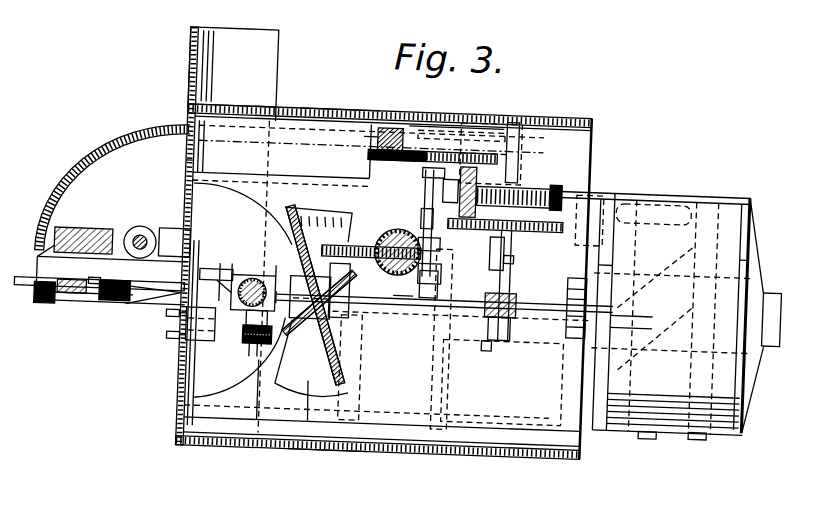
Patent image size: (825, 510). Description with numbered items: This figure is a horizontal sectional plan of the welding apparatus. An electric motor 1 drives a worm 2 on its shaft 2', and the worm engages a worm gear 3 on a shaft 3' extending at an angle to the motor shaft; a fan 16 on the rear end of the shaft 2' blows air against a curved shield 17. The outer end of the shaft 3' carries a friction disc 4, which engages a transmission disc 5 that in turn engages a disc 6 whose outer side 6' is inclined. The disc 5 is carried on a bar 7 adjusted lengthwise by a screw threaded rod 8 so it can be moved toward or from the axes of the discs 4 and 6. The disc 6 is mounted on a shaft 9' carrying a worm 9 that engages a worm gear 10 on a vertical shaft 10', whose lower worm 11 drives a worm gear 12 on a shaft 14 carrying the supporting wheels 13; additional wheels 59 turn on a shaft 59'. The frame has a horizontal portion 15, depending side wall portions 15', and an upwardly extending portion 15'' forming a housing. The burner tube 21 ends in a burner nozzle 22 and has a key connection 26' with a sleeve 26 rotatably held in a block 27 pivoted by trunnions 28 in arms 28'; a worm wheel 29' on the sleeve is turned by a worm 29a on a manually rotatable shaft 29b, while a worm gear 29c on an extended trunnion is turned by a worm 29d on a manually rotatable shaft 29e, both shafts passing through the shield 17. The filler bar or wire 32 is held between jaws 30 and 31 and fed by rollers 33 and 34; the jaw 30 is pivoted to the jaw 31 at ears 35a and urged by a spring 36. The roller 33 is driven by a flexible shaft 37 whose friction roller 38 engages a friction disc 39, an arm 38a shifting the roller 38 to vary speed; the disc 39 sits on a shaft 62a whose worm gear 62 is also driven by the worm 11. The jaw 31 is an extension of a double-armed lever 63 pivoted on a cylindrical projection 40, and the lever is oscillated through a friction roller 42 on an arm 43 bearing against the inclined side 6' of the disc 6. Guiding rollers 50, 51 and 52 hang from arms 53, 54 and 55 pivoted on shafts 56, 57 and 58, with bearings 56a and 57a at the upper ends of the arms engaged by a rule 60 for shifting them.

The electric motor 1 is at (765, 350).
The worm 2 is at (443, 331).
The motor shaft 2' is at (346, 327).
The worm gear 3 is at (512, 286).
The shaft 3' is at (513, 251).
The friction disc 4 is at (590, 179).
The transmission disc 5 is at (505, 176).
The friction disc 6 is at (495, 137).
The inclined outer side 6' is at (484, 121).
The bar 7 is at (490, 212).
The screw threaded rod 8 is at (535, 177).
The worm 9 is at (419, 226).
The shaft 9' is at (412, 211).
The worm gear 10 is at (396, 245).
The vertical shaft 10' is at (370, 269).
The worm 11 is at (430, 266).
The worm gear 12 is at (331, 242).
The supporting wheels 13 is at (270, 205).
The shaft 14 is at (372, 362).
The horizontal portion of the frame 15 is at (384, 260).
The depending side wall portions 15' is at (341, 315).
The upwardly extending portion 15'' is at (333, 280).
The fan 16 is at (318, 402).
The curved shield 17 is at (188, 172).
The tube 21 is at (300, 275).
The burner nozzle 22 is at (230, 270).
The sleeve 26 is at (261, 273).
The key connection 26' is at (250, 260).
The block 27 is at (217, 274).
The trunnions 28 is at (261, 289).
The arms 28' is at (259, 310).
The worm wheel 29' is at (218, 289).
The worm 29a is at (318, 320).
The manually rotatable shaft 29b is at (175, 314).
The worm gear 29c is at (256, 343).
The worm 29d is at (239, 357).
The manually rotatable shaft 29e is at (178, 338).
The jaw 30 is at (118, 304).
The jaw 31 is at (183, 290).
The bar or wire 32 is at (40, 280).
The roller 33 is at (78, 300).
The roller 34 is at (118, 306).
The ears 35a is at (132, 284).
The spring 36 is at (47, 309).
The flexible shaft 37 is at (64, 186).
The friction roller 38 is at (440, 116).
The arm 38a is at (436, 128).
The friction disc 39 is at (370, 150).
The cylindrical projection 40 is at (143, 228).
The friction roller 42 is at (392, 120).
The arm 43 is at (371, 118).
The guiding roller 50 is at (355, 305).
The guiding roller 51 is at (410, 300).
The guiding roller 52 is at (640, 312).
The arm 53 is at (370, 299).
The arm 54 is at (574, 316).
The arm 55 is at (650, 300).
The shaft 56 is at (460, 372).
The bearing 56a is at (495, 340).
The shaft 57 is at (566, 396).
The bearing 57a is at (612, 258).
The shaft 58 is at (757, 409).
The supporting wheels 59 is at (652, 283).
The shaft 59' is at (655, 301).
The rule 60 is at (542, 340).
The worm gear 62 is at (496, 282).
The shaft 62a is at (492, 257).
The lever 63 is at (96, 231).